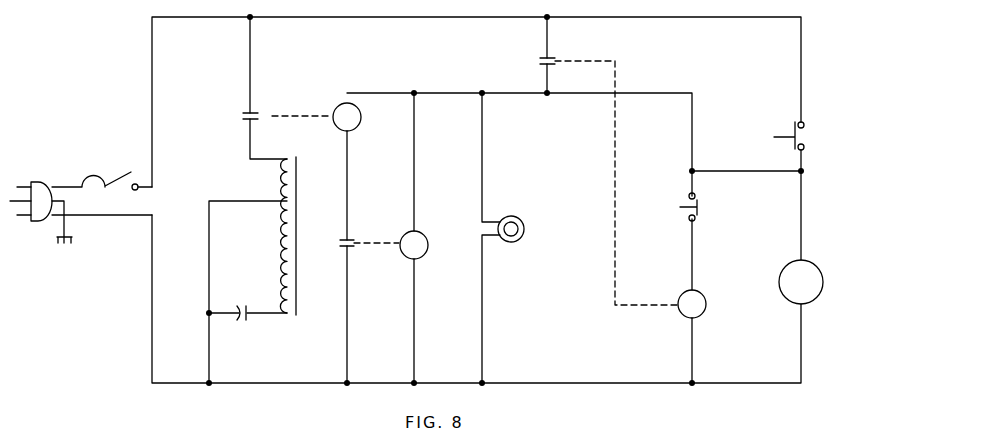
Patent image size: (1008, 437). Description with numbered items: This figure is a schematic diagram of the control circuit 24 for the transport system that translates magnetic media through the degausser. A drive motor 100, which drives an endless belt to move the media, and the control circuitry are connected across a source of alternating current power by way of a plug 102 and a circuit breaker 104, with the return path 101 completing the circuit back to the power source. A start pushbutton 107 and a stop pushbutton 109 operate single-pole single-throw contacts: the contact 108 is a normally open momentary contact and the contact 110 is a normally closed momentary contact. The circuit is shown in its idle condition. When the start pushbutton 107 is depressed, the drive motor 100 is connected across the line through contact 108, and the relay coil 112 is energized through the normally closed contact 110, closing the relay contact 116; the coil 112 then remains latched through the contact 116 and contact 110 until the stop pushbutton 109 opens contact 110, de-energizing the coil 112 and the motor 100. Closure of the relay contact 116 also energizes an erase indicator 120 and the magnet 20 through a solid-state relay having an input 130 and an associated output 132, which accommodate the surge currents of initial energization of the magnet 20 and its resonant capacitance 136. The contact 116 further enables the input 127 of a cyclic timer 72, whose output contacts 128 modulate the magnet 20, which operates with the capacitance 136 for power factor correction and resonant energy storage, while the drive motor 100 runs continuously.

The control circuit 24 is at (122, 70).
The plug 102 is at (35, 181).
The circuit breaker 104 is at (106, 194).
The return path 101 is at (152, 367).
The solid-state relay output 132 is at (253, 112).
The source of magnetic flux 20 is at (296, 324).
The resonant capacitance 136 is at (246, 327).
The solid-state relay input 130 is at (352, 137).
The cyclic timer output contacts 128 is at (350, 236).
The cyclic timer input 127 is at (421, 232).
The cyclic timer 72 is at (376, 257).
The erase indicator 120 is at (520, 240).
The relay contact 116 is at (538, 61).
The normally open momentary contact 108 is at (808, 130).
The start pushbutton 107 is at (788, 134).
The normally closed momentary contact 110 is at (699, 214).
The stop pushbutton 109 is at (680, 205).
The relay coil 112 is at (702, 296).
The drive motor 100 is at (823, 272).